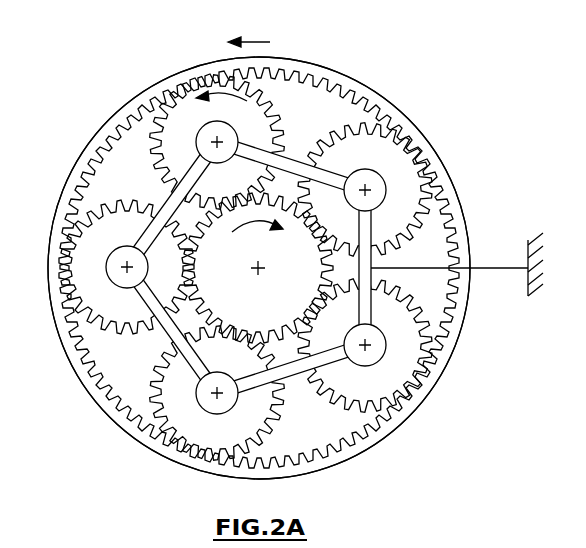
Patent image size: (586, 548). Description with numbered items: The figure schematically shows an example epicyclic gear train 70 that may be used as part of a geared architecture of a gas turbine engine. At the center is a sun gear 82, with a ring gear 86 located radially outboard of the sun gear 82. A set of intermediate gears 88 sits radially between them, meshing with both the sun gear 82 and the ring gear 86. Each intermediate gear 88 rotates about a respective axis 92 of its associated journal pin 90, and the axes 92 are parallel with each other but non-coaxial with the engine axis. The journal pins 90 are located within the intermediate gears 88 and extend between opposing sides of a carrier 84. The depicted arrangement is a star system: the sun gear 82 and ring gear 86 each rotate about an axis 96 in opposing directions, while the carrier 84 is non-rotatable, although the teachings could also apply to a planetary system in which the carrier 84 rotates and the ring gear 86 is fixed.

The epicyclic gear train 70 is at (413, 60).
The sun gear 82 is at (272, 304).
The carrier 84 is at (168, 208).
The ring gear 86 is at (70, 352).
The intermediate gear 88 is at (287, 136).
The journal pin 90 is at (188, 135).
The axis 92 is at (224, 132).
The axis 96 is at (262, 264).